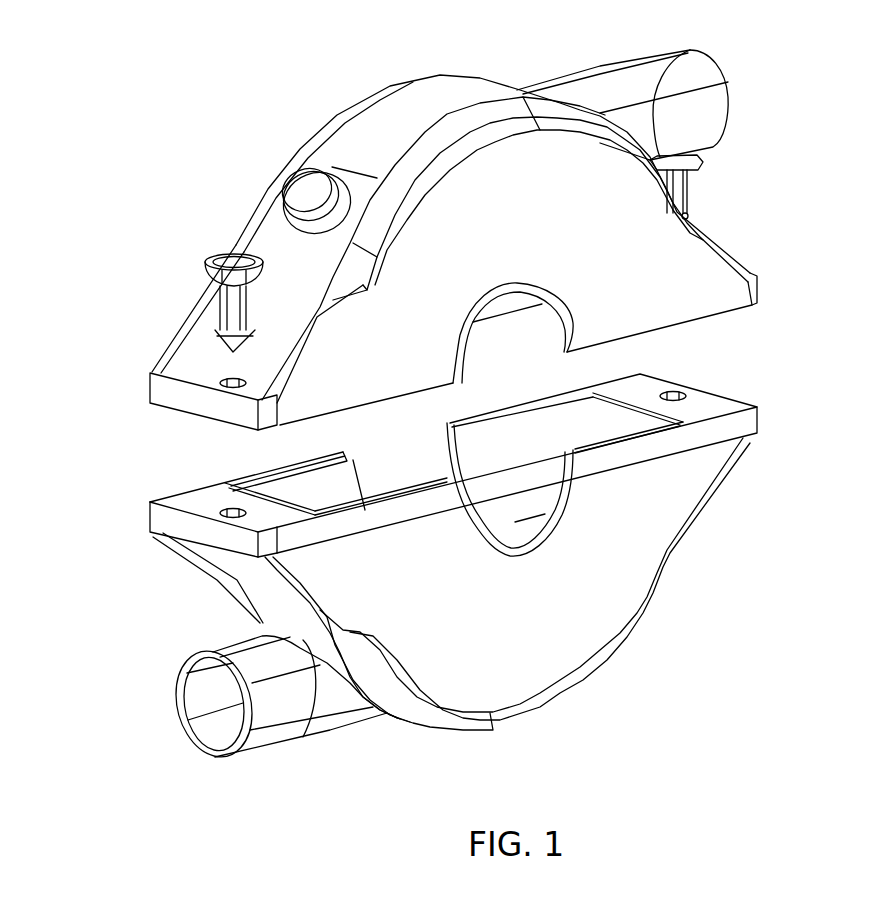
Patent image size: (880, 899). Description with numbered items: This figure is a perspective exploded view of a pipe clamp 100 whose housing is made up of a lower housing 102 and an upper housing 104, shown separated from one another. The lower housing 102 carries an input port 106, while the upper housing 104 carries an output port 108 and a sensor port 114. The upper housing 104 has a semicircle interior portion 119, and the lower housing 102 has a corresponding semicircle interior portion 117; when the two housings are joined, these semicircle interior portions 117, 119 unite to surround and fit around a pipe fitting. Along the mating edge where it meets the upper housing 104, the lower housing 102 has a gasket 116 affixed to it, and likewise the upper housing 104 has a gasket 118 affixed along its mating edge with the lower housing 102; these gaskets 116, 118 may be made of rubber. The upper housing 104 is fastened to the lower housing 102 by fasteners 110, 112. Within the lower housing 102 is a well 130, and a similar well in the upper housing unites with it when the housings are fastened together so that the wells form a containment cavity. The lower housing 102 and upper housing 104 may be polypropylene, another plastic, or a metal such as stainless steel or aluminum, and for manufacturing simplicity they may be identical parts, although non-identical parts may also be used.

The pipe clamp 100 is at (117, 137).
The lower housing 102 is at (528, 637).
The upper housing 104 is at (430, 93).
The input port 106 is at (278, 707).
The output port 108 is at (672, 67).
The fastener 110 is at (221, 261).
The fastener 112 is at (683, 190).
The sensor port 114 is at (303, 183).
The gasket 116 is at (542, 405).
The semicircle interior portion 117 is at (480, 550).
The gasket 118 is at (562, 320).
The semicircle interior portion 119 is at (518, 282).
The well 130 is at (330, 492).